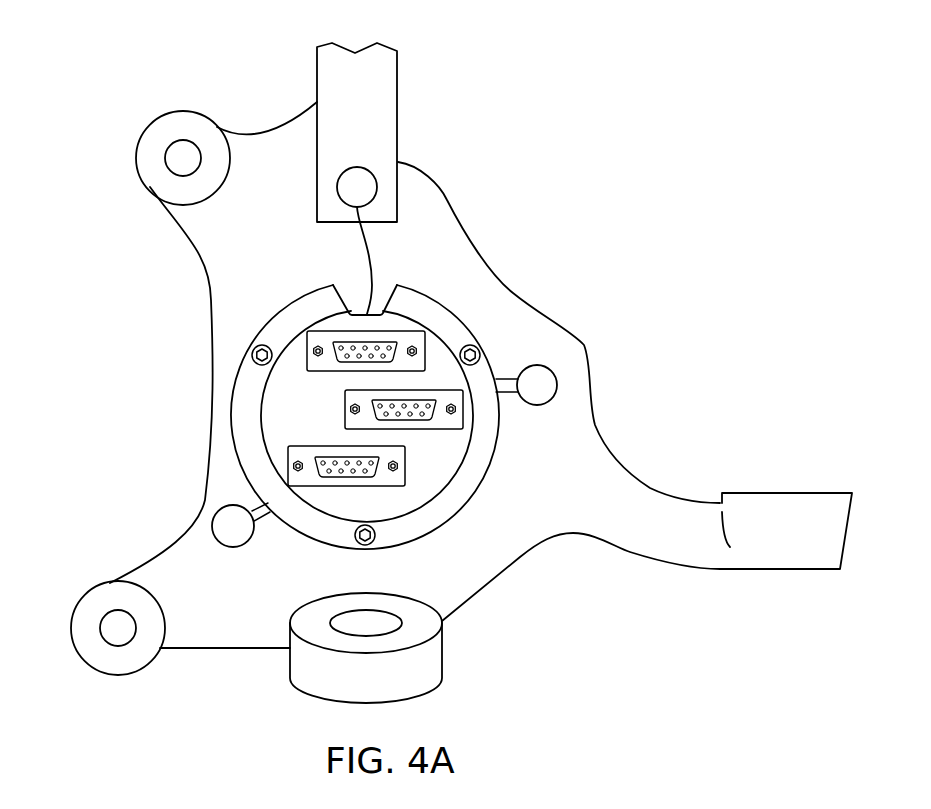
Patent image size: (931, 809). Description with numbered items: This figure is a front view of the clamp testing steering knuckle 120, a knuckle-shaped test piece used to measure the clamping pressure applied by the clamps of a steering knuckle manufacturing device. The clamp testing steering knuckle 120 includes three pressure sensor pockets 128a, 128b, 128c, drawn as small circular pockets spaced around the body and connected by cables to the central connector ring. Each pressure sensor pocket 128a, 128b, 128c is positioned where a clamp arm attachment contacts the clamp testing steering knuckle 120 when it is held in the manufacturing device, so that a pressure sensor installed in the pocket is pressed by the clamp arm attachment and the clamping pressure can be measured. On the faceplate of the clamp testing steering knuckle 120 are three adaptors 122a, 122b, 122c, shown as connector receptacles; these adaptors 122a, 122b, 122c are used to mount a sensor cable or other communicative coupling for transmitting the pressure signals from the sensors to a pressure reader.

The clamp testing steering knuckle 120 is at (630, 187).
The adaptor 122a is at (407, 335).
The adaptor 122b is at (453, 423).
The adaptor 122c is at (291, 479).
The pressure sensor pocket 128a is at (364, 190).
The pressure sensor pocket 128b is at (545, 388).
The pressure sensor pocket 128c is at (232, 535).